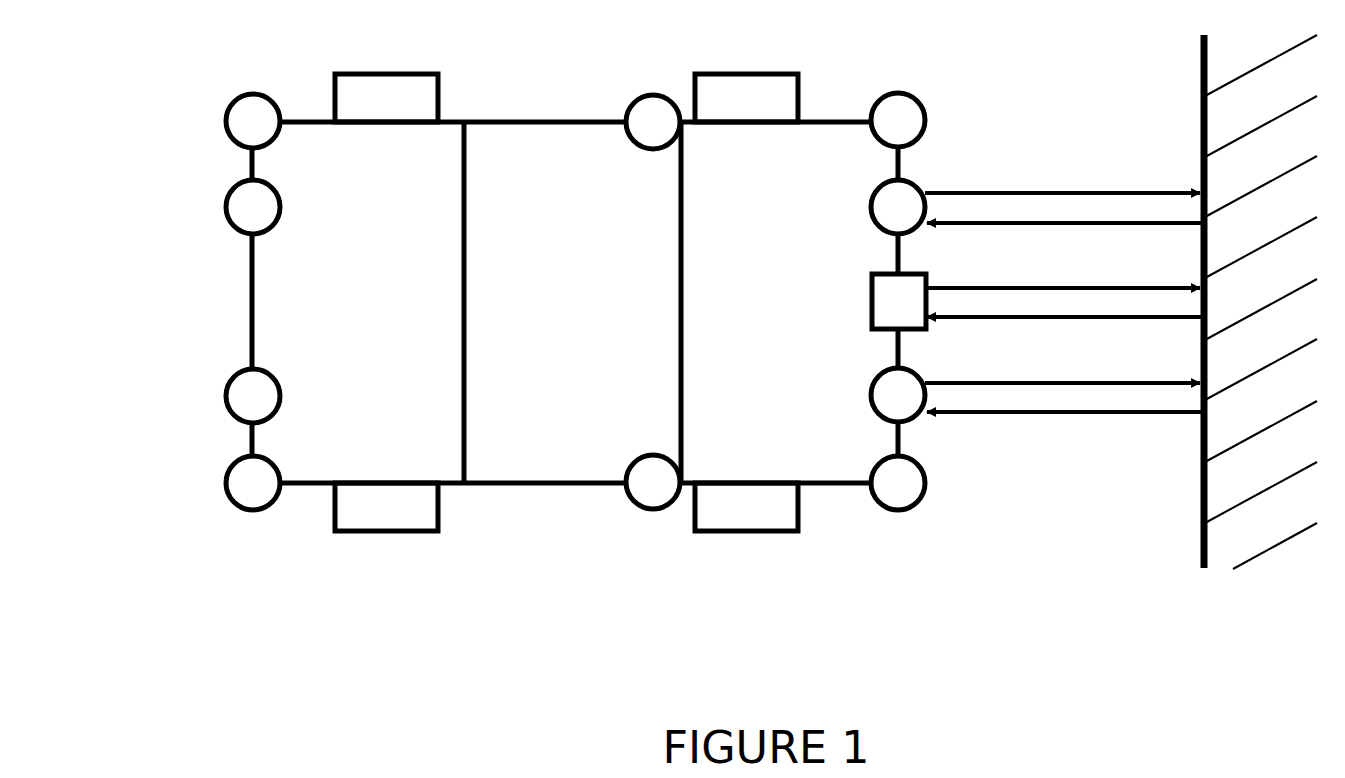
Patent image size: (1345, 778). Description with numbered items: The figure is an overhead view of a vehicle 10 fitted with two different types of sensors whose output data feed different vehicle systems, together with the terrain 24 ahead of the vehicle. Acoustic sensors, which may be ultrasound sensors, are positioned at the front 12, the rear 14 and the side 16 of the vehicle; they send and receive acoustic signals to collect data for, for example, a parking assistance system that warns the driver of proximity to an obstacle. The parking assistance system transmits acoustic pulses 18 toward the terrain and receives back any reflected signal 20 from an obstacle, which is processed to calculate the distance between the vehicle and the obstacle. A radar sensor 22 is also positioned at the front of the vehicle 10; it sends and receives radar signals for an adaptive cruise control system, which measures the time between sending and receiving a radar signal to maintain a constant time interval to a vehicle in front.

The vehicle 10 is at (548, 586).
The front acoustic sensors 12 is at (913, 183).
The rear acoustic sensors 14 is at (237, 417).
The side acoustic sensors 16 is at (647, 510).
The acoustic pulses 18 is at (1010, 192).
The reflected signal 20 is at (1087, 222).
The radar sensor 22 is at (912, 330).
The terrain 24 is at (1275, 527).